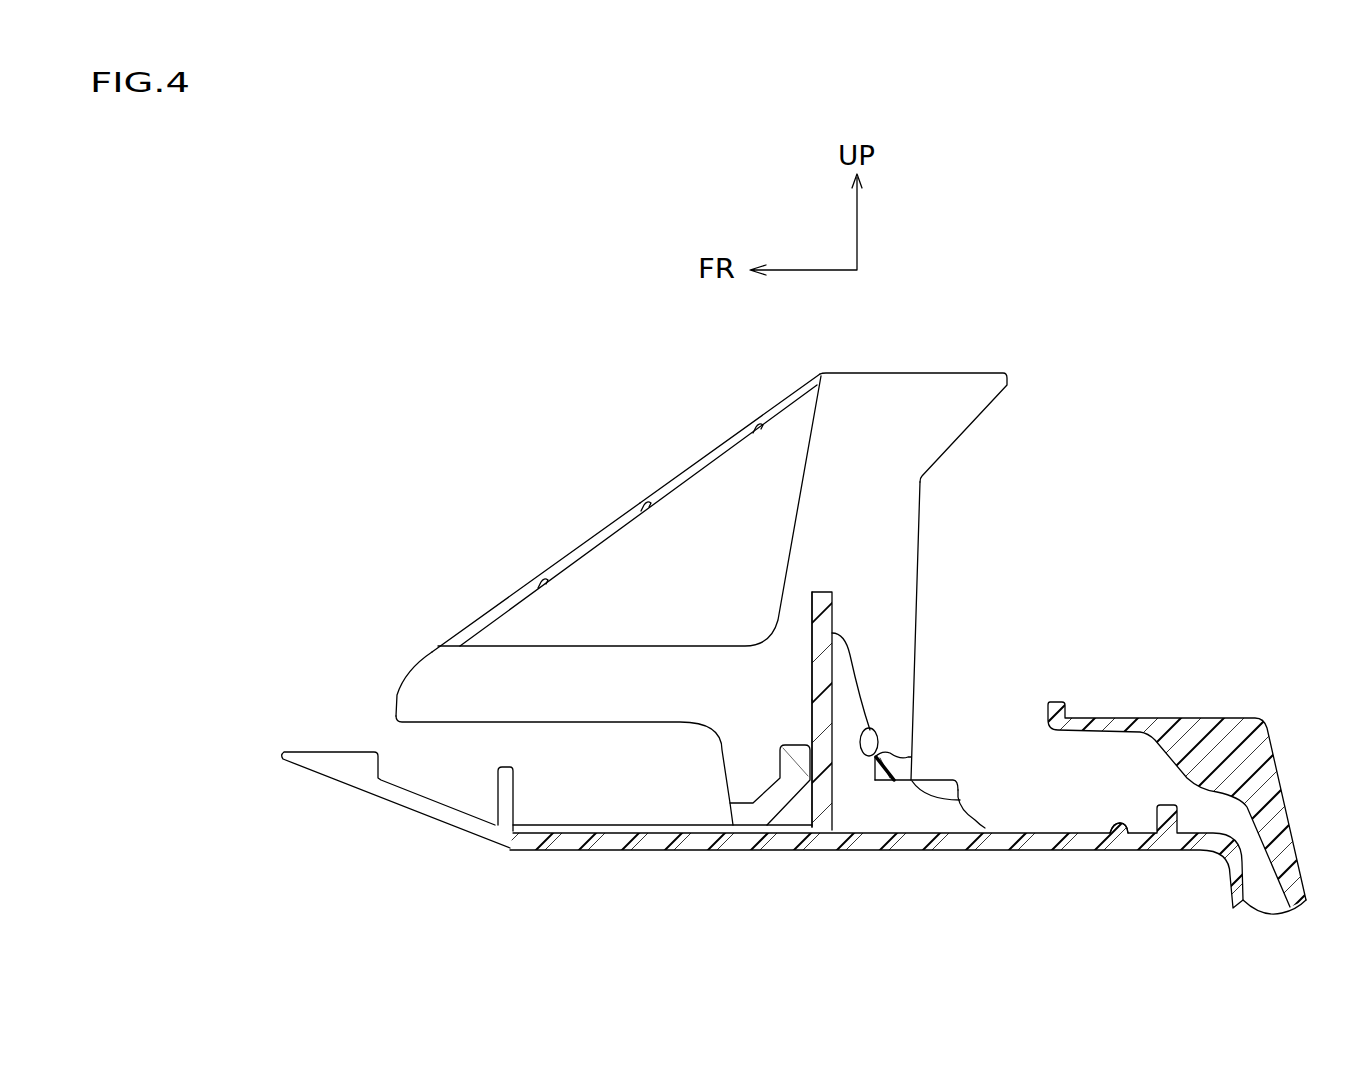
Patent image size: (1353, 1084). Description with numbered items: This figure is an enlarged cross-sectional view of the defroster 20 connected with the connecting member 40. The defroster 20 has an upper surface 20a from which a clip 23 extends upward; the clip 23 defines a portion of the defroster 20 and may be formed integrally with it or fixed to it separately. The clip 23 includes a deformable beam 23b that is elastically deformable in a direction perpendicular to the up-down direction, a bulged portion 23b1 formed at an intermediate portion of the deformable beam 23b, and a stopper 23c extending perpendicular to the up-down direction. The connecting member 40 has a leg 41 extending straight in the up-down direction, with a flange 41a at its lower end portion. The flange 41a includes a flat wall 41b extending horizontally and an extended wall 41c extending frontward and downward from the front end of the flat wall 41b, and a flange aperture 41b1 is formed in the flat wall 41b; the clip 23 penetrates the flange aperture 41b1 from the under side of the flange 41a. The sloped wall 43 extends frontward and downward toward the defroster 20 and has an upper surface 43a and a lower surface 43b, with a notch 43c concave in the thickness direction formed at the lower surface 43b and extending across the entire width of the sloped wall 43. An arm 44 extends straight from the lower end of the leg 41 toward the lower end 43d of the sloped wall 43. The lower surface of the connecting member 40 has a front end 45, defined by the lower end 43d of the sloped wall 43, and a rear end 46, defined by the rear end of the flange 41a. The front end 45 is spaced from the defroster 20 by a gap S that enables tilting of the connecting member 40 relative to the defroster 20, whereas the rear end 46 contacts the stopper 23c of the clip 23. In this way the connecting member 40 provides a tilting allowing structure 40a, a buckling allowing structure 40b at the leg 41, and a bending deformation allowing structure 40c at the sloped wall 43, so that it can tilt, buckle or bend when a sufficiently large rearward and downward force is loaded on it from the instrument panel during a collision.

The connecting member 40 is at (944, 371).
The tilting allowing structure 40a is at (840, 832).
The buckling allowing structure 40b is at (893, 542).
The bending deformation allowing structure 40c is at (573, 549).
The leg 41 is at (887, 510).
The flange 41a is at (897, 766).
The flat wall 41b is at (926, 711).
The flange aperture 41b1 is at (873, 729).
The extended wall 41c is at (778, 803).
The sloped wall 43 is at (568, 545).
The upper surface 43a is at (727, 441).
The lower surface 43b is at (690, 480).
The notch 43c is at (757, 430).
The lower end of sloped wall 43d is at (393, 705).
The arm 44 is at (557, 703).
The front end of lower surface 45 is at (395, 727).
The rear end of lower surface 46 is at (915, 779).
The gap S is at (383, 740).
The clip 23 is at (823, 617).
The deformable beam 23b is at (822, 635).
The bulged portion 23b1 is at (808, 730).
The stopper 23c is at (932, 779).
The defroster 20 is at (1060, 843).
The upper surface of defroster 20a is at (1115, 823).